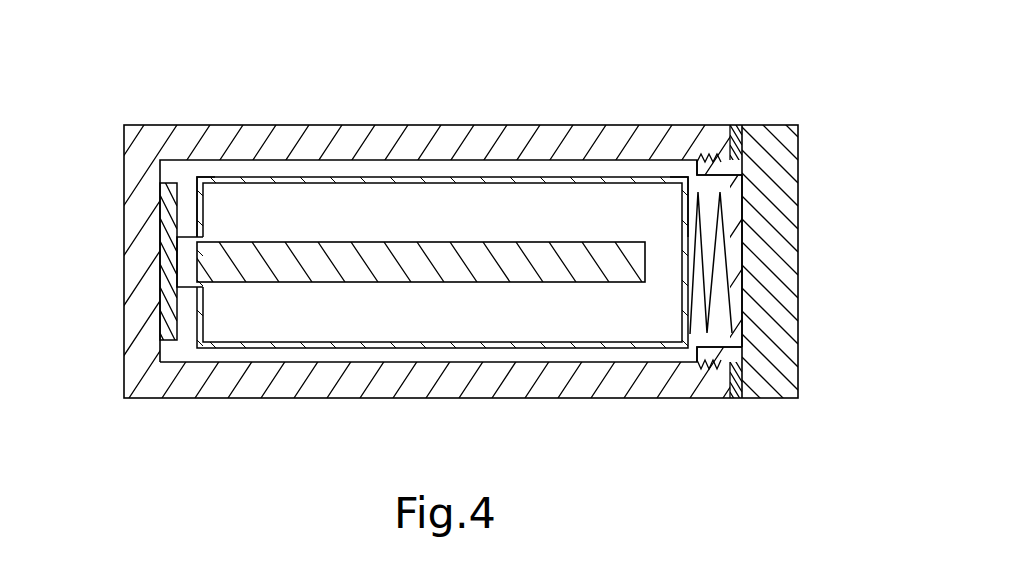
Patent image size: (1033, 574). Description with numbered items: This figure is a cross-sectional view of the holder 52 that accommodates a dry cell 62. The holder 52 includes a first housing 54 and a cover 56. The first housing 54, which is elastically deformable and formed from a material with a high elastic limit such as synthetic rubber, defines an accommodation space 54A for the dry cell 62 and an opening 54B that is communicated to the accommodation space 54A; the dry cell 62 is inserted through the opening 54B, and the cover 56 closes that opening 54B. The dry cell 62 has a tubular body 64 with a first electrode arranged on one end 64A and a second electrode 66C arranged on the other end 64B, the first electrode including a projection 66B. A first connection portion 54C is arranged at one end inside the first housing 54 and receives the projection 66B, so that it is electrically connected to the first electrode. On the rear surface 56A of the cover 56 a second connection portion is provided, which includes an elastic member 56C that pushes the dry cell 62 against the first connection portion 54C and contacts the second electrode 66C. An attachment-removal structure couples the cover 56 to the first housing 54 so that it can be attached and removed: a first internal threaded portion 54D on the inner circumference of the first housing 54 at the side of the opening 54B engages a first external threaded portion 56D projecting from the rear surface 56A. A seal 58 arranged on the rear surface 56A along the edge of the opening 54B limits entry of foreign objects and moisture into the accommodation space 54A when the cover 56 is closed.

The holder 52 is at (808, 62).
The first housing 54 is at (495, 125).
The accommodation space 54A is at (235, 167).
The opening 54B is at (700, 155).
The first connection portion 54C is at (190, 332).
The first internal threaded portion 54D is at (724, 154).
The cover 56 is at (798, 124).
The rear surface 56A is at (746, 366).
The elastic member 56C is at (743, 318).
The first external threaded portion 56D is at (715, 176).
The seal 58 is at (738, 398).
The dry cell 62 is at (483, 353).
The body 64 is at (408, 177).
The one end of the body 64A is at (194, 187).
The other end of the body 64B is at (686, 176).
The projection 66B is at (160, 275).
The second electrode 66C is at (703, 285).